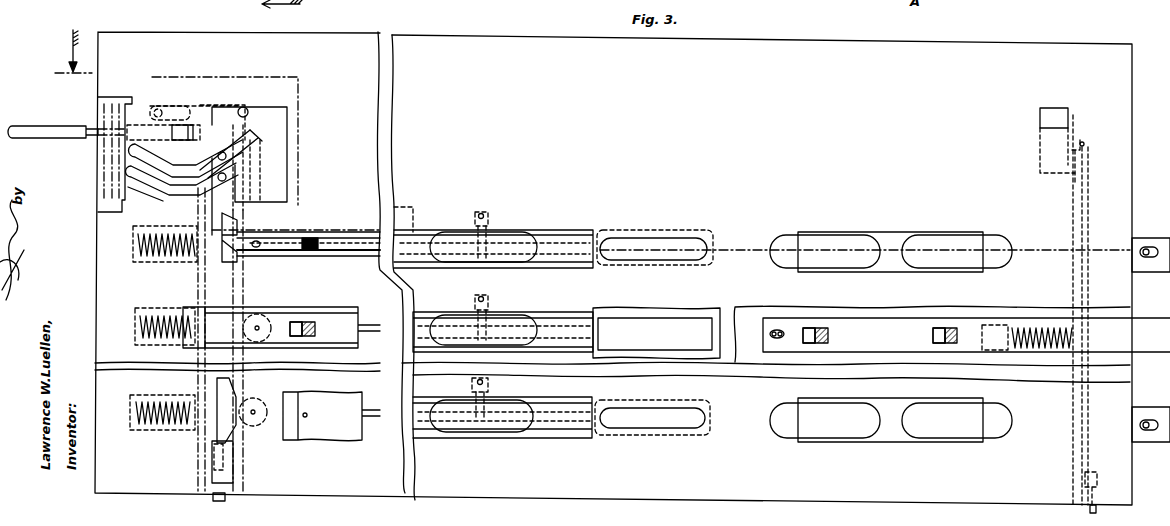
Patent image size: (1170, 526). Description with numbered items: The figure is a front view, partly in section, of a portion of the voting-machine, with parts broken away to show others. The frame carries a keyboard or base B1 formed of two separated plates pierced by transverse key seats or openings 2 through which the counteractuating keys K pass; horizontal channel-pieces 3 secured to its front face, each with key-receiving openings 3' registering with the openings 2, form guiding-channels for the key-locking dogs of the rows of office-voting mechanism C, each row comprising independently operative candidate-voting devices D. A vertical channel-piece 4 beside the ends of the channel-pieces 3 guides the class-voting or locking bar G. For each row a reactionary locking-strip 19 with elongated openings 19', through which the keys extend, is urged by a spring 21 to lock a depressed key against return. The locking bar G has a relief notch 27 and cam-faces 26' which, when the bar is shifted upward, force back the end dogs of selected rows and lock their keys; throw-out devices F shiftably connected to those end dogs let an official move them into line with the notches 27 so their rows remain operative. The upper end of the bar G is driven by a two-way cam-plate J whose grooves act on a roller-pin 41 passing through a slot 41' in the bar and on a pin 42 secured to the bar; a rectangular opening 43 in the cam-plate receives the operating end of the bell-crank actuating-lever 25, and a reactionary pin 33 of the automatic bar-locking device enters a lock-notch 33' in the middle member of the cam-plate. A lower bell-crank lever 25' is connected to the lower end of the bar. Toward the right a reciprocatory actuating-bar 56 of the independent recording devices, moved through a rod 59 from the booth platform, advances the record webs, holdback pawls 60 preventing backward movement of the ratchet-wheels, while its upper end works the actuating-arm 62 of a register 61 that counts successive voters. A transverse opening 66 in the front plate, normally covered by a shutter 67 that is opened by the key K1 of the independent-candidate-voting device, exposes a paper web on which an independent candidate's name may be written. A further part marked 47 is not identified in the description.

The key seats or openings 2 is at (67, 55).
The channel-piece 3 is at (641, 260).
The key-receiving openings 3' is at (297, 311).
The vertically-disposed channel-piece 4 is at (180, 452).
The reactionary locking-strip 19 is at (676, 351).
The elongated openings 19' is at (874, 313).
The spring 21 is at (150, 314).
The actuating-lever 25 is at (66, 121).
The bar-shifting lever 25' is at (245, 471).
The cam-face 26' is at (249, 223).
The notch or relief-space 27 is at (215, 255).
The reactionary pin 33 is at (256, 102).
The lock-notch 33' is at (186, 113).
The roller-pin 41 is at (239, 153).
The slot 41' is at (268, 125).
The pin 42 is at (228, 178).
The rectangular transverse opening 43 is at (188, 125).
The bracket 47 is at (106, 178).
The reciprocatory actuating-bar 56 is at (1089, 218).
The rod 59 is at (1098, 490).
The holdback device 60 is at (665, 428).
The register 61 is at (1062, 107).
The actuating-arm 62 is at (1084, 146).
The transverse opening 66 is at (658, 240).
The shutter 67 is at (712, 232).
The keyboard or base B1 is at (738, 126).
The office-voting mechanism C is at (518, 234).
The candidate-voting device D is at (591, 419).
The throw-out device F is at (274, 246).
The class-voting or locking bar G is at (215, 380).
The two-way cam-plate J is at (290, 150).
The counteractuating key K is at (316, 240).
The key of independent-candidate-voting device K1 is at (470, 240).